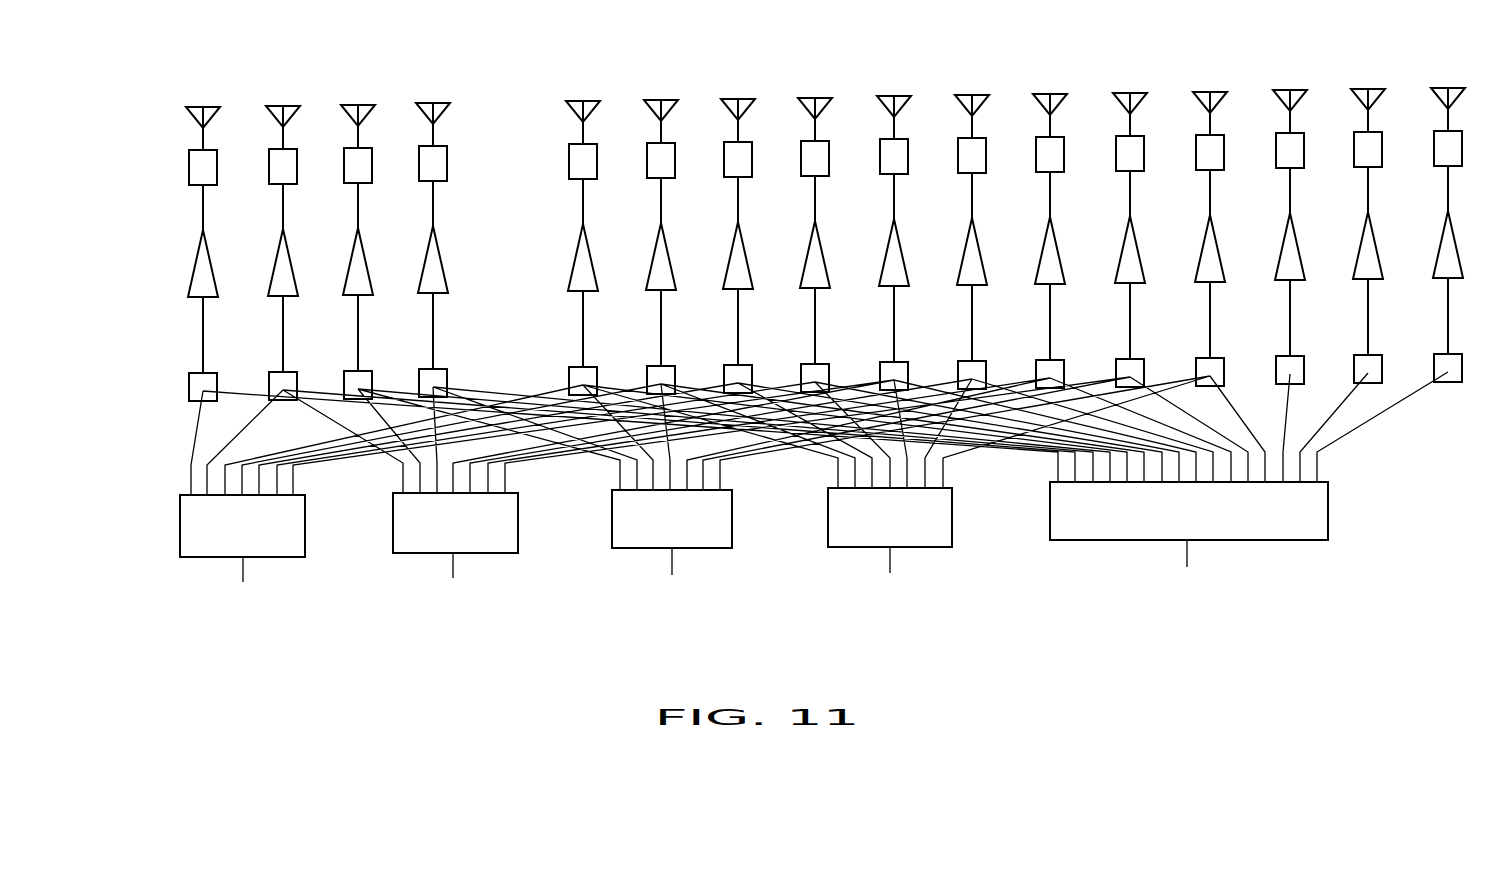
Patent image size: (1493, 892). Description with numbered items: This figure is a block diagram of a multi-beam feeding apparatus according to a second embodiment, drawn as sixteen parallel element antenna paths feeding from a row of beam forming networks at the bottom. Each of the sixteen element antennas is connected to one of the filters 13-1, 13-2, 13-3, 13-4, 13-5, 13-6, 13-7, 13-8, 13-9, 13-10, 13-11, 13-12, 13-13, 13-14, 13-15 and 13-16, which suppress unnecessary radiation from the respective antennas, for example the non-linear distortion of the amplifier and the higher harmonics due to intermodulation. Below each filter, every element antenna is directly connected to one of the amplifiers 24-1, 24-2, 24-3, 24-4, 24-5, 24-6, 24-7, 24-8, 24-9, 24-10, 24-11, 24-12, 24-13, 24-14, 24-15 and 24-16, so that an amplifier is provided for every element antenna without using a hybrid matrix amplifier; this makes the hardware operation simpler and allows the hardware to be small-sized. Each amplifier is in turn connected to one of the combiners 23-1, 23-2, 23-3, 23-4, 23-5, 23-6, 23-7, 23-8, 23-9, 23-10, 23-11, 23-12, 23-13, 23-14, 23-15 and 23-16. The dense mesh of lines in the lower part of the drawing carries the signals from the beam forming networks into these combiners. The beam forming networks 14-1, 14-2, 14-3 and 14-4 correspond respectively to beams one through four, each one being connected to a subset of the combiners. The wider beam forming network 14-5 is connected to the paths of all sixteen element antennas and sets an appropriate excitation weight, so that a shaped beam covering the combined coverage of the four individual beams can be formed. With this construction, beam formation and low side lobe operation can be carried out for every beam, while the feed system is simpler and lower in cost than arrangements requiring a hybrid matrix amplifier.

The filter 13-1 is at (184, 116).
The filter 13-2 is at (264, 115).
The filter 13-3 is at (339, 114).
The filter 13-4 is at (414, 112).
The filter 13-5 is at (564, 110).
The filter 13-6 is at (642, 109).
The filter 13-7 is at (719, 108).
The filter 13-8 is at (796, 107).
The filter 13-9 is at (875, 105).
The filter 13-10 is at (952, 104).
The filter 13-11 is at (1030, 103).
The filter 13-12 is at (1110, 102).
The filter 13-13 is at (1190, 101).
The filter 13-14 is at (1270, 99).
The filter 13-15 is at (1348, 98).
The filter 13-16 is at (1428, 97).
The amplifier 24-1 is at (185, 250).
The amplifier 24-2 is at (265, 249).
The amplifier 24-3 is at (340, 248).
The amplifier 24-4 is at (415, 246).
The amplifier 24-5 is at (565, 244).
The amplifier 24-6 is at (643, 243).
The amplifier 24-7 is at (720, 242).
The amplifier 24-8 is at (797, 241).
The amplifier 24-9 is at (876, 239).
The amplifier 24-10 is at (946, 238).
The amplifier 24-11 is at (1024, 237).
The amplifier 24-12 is at (1104, 236).
The amplifier 24-13 is at (1184, 235).
The amplifier 24-14 is at (1264, 233).
The amplifier 24-15 is at (1342, 232).
The amplifier 24-16 is at (1422, 231).
The combiner 23-1 is at (184, 367).
The combiner 23-2 is at (264, 366).
The combiner 23-3 is at (339, 365).
The combiner 23-4 is at (414, 363).
The combiner 23-5 is at (564, 361).
The combiner 23-6 is at (642, 360).
The combiner 23-7 is at (719, 359).
The combiner 23-8 is at (796, 358).
The combiner 23-9 is at (875, 356).
The combiner 23-10 is at (946, 355).
The combiner 23-11 is at (1024, 354).
The combiner 23-12 is at (1104, 353).
The combiner 23-13 is at (1184, 352).
The combiner 23-14 is at (1264, 350).
The combiner 23-15 is at (1342, 349).
The combiner 23-16 is at (1422, 348).
The beam forming network 14-1 is at (278, 557).
The beam forming network 14-2 is at (495, 553).
The beam forming network 14-3 is at (712, 548).
The beam forming network 14-4 is at (935, 547).
The beam forming network 14-5 is at (1235, 540).